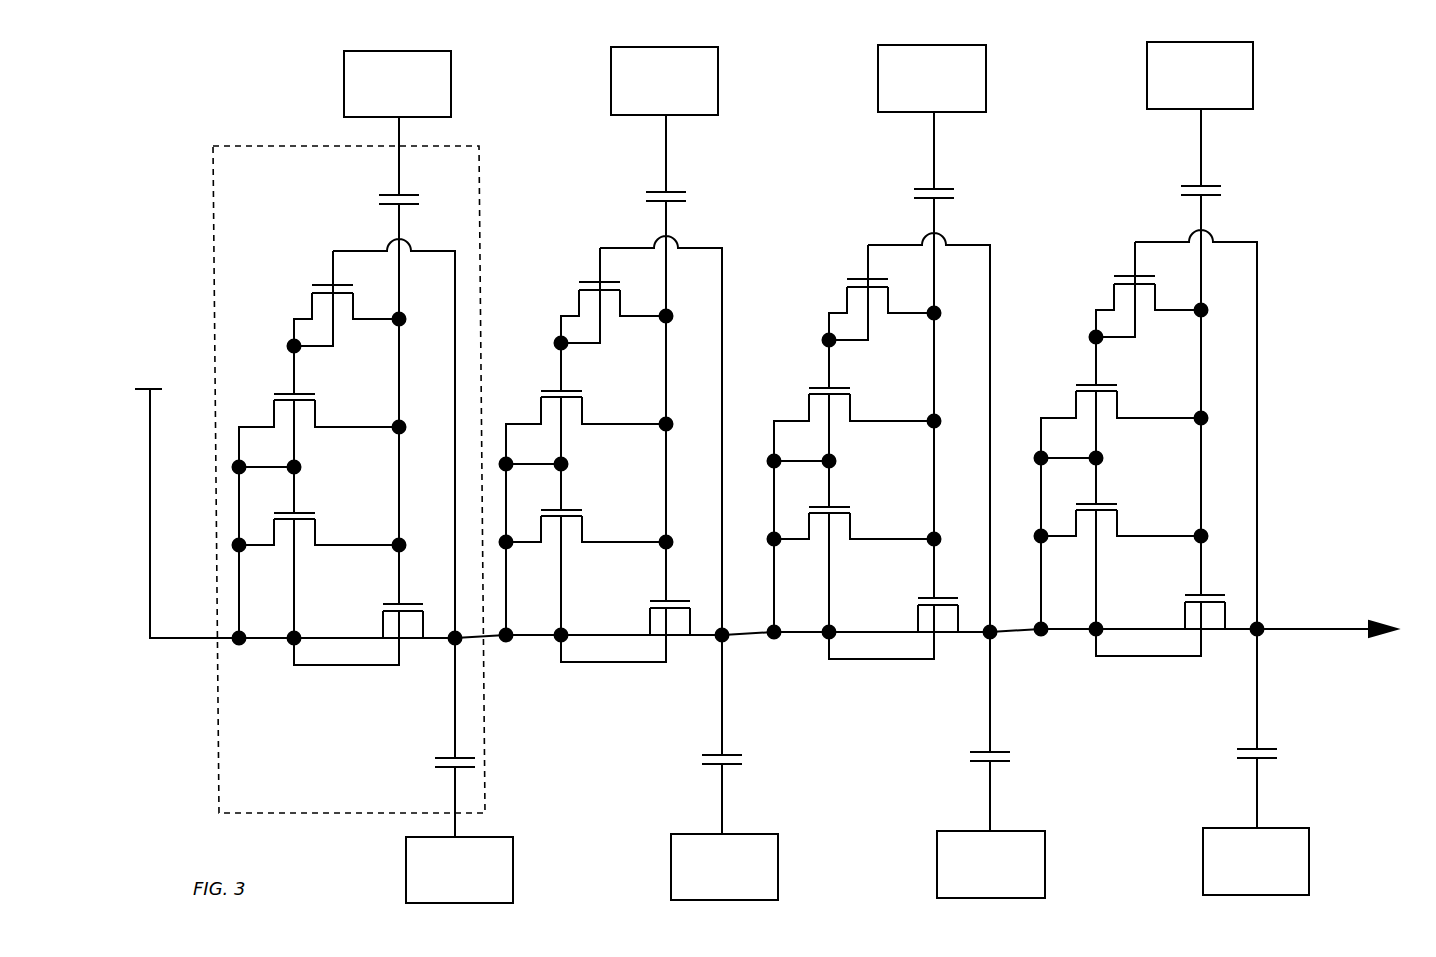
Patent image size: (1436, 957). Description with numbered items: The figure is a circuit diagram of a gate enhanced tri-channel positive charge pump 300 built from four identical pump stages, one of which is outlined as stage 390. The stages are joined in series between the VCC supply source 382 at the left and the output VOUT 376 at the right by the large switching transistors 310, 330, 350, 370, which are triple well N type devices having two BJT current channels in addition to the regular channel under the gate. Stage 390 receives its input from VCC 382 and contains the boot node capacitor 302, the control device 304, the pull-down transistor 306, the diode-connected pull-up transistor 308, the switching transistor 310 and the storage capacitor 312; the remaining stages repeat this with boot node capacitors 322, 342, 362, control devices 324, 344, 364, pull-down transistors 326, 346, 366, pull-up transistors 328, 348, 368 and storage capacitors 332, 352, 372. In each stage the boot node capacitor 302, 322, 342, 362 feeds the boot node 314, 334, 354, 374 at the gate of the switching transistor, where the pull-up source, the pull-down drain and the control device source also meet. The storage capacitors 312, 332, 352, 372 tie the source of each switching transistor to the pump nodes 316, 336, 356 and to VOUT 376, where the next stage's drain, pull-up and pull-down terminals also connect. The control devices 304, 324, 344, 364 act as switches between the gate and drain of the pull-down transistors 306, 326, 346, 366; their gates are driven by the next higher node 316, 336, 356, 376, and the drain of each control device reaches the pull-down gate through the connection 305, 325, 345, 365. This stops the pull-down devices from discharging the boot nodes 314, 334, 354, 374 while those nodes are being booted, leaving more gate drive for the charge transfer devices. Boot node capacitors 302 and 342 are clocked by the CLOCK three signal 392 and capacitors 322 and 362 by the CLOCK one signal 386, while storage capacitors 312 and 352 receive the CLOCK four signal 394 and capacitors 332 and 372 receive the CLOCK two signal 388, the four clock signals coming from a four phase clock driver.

The gate enhanced tri-channel positive charge pump 300 is at (1318, 382).
The boot node capacitor C11 302 is at (398, 160).
The control device N11 304 is at (346, 298).
The node 305 is at (290, 340).
The pull-down transistor N12 306 is at (319, 410).
The pull-up transistor N13 308 is at (319, 552).
The switching transistor N14 310 is at (347, 605).
The storage capacitor C12 312 is at (444, 737).
The boot node 314 is at (400, 472).
The node 316 is at (530, 666).
The boot node capacitor C21 322 is at (665, 158).
The control device N21 324 is at (613, 295).
The node 325 is at (530, 309).
The pull-down transistor N22 326 is at (586, 407).
The pull-up transistor N23 328 is at (586, 549).
The switching transistor N24 330 is at (614, 602).
The storage capacitor C22 332 is at (711, 734).
The boot node 334 is at (661, 418).
The node 336 is at (797, 662).
The boot node capacitor C31 342 is at (933, 155).
The control device N31 344 is at (881, 292).
The node 345 is at (798, 306).
The pull-down transistor N32 346 is at (854, 404).
The pull-up transistor N33 348 is at (854, 546).
The switching transistor N34 350 is at (882, 599).
The storage capacitor C32 352 is at (979, 731).
The boot node 354 is at (929, 415).
The node 356 is at (1064, 659).
The boot node capacitor C41 362 is at (1200, 152).
The control device N41 364 is at (1148, 289).
The node 365 is at (1065, 303).
The pull-down transistor N42 366 is at (1121, 401).
The pull-up transistor N43 368 is at (1121, 543).
The switching transistor N44 370 is at (1149, 596).
The storage capacitor C42 372 is at (1246, 728).
The boot node 374 is at (1196, 412).
The VOUT 376 is at (1327, 628).
The VCC 382 is at (183, 501).
The CLOCK 1 signal 386 is at (932, 78).
The CLOCK 2 signal 388 is at (990, 864).
The pump stage 390 is at (484, 218).
The CLOCK 3 signal 392 is at (665, 81).
The CLOCK 4 signal 394 is at (725, 867).